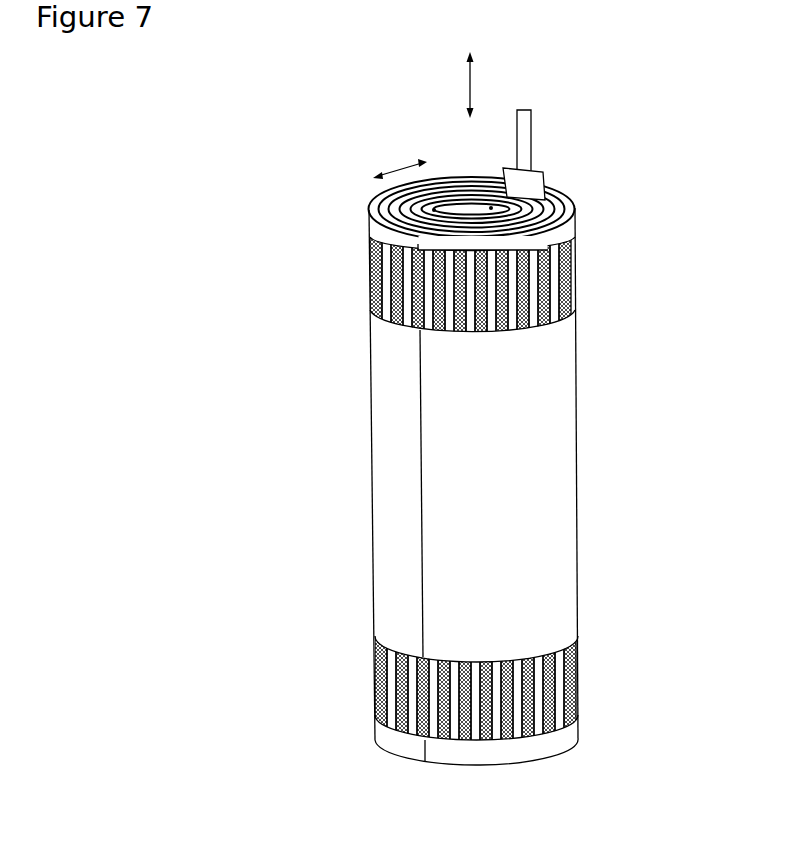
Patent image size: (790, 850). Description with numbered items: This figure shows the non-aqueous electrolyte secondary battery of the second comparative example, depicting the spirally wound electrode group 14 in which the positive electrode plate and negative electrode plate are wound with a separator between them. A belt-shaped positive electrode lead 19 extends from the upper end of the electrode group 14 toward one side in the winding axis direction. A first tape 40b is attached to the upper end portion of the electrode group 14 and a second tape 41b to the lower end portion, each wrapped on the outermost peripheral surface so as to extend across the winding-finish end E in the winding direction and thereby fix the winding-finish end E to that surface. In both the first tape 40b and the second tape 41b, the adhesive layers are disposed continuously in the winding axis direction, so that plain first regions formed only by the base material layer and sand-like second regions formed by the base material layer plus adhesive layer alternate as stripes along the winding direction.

The electrode group 14 is at (593, 367).
The positive electrode lead 19 is at (531, 140).
The first tape 40b is at (525, 319).
The second tape 41b is at (531, 700).
The winding-finish end E is at (420, 470).